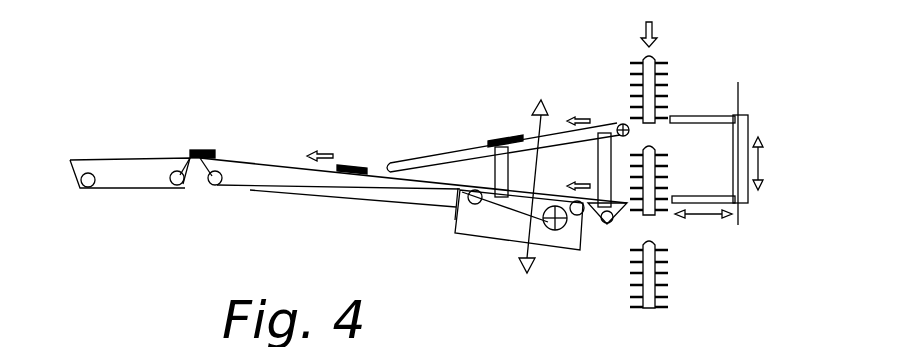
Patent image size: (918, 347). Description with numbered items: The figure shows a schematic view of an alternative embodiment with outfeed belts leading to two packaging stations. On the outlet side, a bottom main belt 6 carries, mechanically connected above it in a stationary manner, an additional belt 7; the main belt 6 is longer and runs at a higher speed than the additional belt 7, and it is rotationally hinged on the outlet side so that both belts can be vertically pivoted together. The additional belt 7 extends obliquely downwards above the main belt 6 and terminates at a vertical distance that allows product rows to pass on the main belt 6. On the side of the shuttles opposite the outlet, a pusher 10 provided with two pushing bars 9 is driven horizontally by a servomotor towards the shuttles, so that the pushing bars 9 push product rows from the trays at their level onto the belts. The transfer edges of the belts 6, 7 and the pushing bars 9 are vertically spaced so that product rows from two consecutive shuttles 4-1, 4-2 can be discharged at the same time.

The main belt 6 is at (283, 177).
The additional belt 7 is at (563, 140).
The shuttle 4-1 is at (655, 62).
The shuttle 4-2 is at (652, 173).
The pushing bars 9 is at (692, 115).
The pusher 10 is at (756, 88).